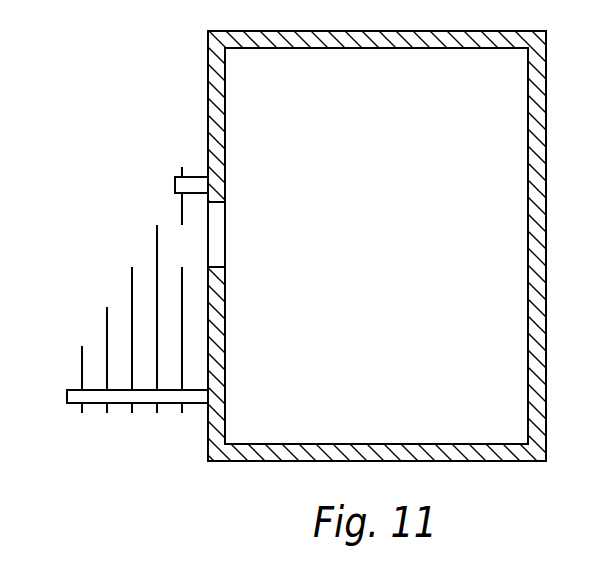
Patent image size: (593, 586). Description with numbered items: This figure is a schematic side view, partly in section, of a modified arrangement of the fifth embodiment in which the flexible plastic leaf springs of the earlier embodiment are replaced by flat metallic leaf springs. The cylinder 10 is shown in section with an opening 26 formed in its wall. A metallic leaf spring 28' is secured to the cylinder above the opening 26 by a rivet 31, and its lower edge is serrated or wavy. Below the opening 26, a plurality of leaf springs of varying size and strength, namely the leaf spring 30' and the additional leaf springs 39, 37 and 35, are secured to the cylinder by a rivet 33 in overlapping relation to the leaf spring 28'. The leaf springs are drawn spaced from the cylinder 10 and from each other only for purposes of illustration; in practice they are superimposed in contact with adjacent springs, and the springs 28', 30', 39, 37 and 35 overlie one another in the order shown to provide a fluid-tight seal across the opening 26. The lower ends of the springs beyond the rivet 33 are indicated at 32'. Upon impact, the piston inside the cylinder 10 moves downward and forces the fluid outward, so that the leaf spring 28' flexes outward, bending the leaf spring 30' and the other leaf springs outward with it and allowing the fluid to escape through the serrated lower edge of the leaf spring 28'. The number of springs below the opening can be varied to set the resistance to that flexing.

The cylinder 10 is at (528, 207).
The opening 26 is at (220, 222).
The rivet 31 is at (197, 176).
The metallic leaf spring 28' is at (160, 249).
The metallic leaf spring 30' is at (127, 273).
The additional leaf spring 39 is at (131, 285).
The additional leaf spring 37 is at (106, 327).
The additional leaf spring 35 is at (81, 370).
The rivet 33 is at (80, 408).
The terminal 32' is at (133, 447).